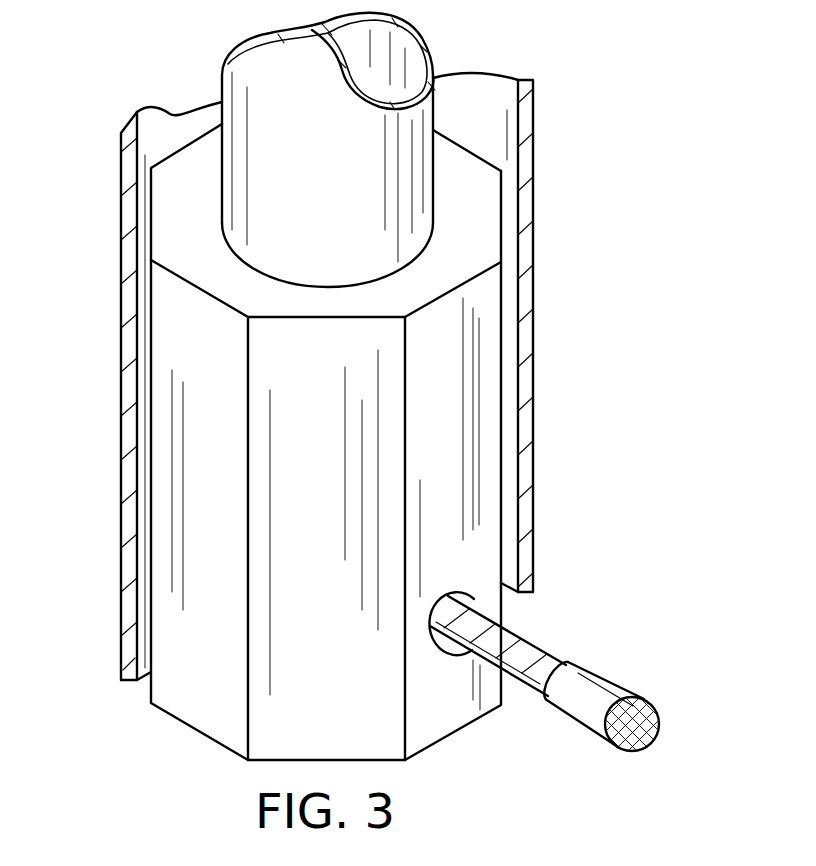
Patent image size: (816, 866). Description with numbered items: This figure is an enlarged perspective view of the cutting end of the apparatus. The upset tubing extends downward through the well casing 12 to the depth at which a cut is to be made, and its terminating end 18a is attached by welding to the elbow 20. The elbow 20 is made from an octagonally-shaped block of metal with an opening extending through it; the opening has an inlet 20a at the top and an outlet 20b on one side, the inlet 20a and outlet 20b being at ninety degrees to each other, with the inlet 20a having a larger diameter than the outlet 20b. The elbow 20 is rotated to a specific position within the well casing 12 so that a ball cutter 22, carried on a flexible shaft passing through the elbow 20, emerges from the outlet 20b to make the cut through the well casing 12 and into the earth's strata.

The well casing 12 is at (518, 278).
The terminating end 18a is at (457, 208).
The elbow 20 is at (500, 482).
The inlet 20a is at (222, 222).
The outlet 20b is at (483, 610).
The ball cutter 22 is at (661, 719).